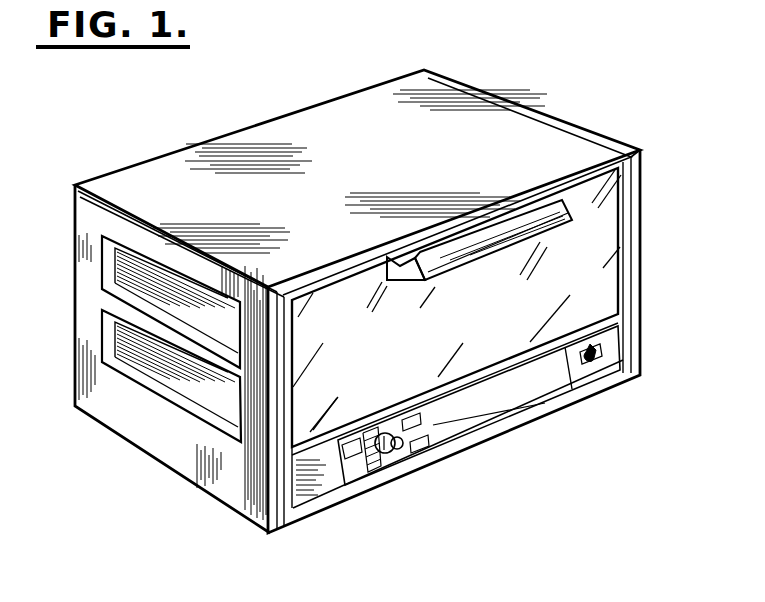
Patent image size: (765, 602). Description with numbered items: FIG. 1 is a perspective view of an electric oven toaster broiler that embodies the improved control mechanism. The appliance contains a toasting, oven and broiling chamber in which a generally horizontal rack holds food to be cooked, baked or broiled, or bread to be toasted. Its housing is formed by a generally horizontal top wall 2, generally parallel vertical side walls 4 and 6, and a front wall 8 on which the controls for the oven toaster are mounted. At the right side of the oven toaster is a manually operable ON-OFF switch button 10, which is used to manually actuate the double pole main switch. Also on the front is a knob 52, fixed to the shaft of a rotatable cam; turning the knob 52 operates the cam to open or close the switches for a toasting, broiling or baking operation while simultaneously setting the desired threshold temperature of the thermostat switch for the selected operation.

The top wall 2 is at (578, 147).
The side wall 4 is at (158, 449).
The side wall 6 is at (642, 219).
The front wall 8 is at (598, 296).
The ON-OFF switch button 10 is at (586, 366).
The knob 52 is at (400, 448).